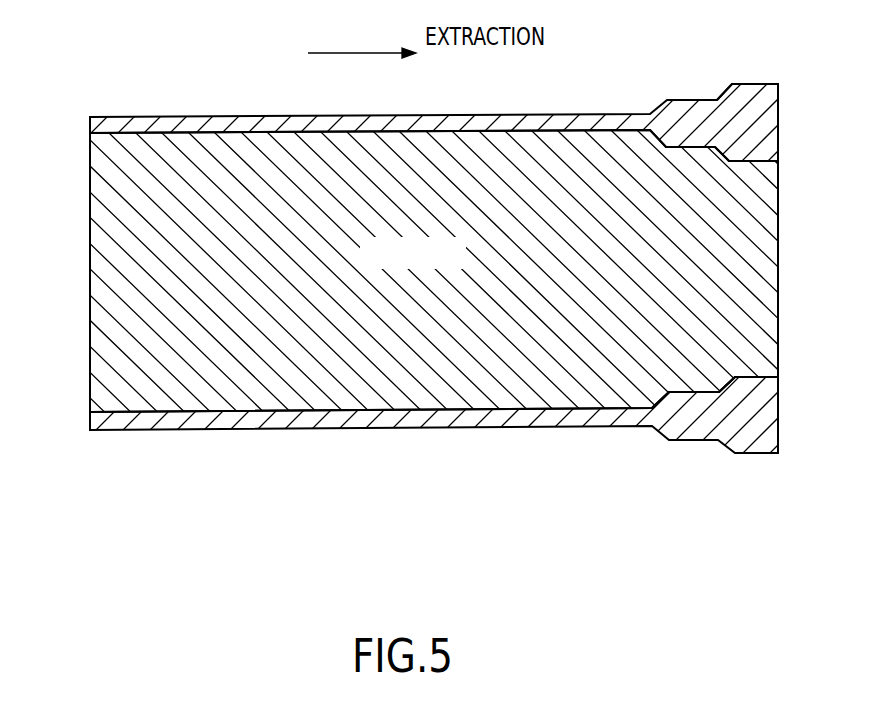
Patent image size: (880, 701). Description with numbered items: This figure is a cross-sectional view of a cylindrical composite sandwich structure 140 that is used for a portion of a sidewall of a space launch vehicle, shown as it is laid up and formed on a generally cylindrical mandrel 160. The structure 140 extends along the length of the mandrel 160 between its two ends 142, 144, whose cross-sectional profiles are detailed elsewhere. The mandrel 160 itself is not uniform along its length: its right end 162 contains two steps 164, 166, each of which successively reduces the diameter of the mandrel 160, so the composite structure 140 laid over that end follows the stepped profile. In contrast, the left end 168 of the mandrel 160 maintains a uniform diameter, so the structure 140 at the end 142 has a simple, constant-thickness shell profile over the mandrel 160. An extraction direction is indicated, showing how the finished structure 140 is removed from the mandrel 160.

The cylindrical composite sandwich structure 140 is at (227, 102).
The end of the cylindrical composite sandwich structure 142 is at (90, 116).
The end of the cylindrical composite sandwich structure 144 is at (779, 122).
The mandrel 160 is at (127, 325).
The right end of the mandrel 162 is at (779, 268).
The step 164 is at (706, 391).
The step 166 is at (758, 376).
The left end of the mandrel 168 is at (90, 245).